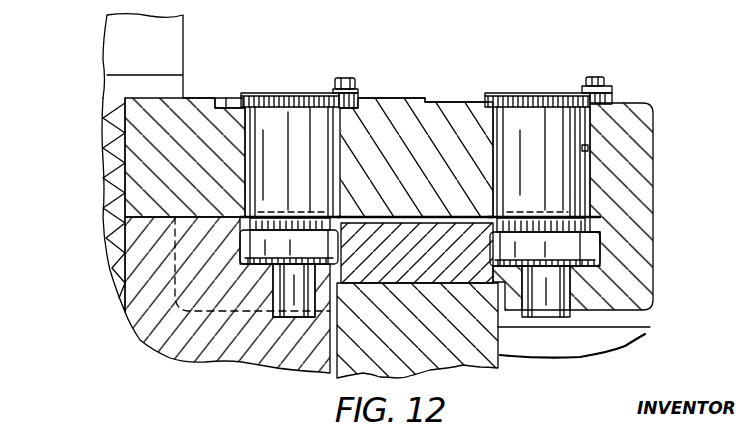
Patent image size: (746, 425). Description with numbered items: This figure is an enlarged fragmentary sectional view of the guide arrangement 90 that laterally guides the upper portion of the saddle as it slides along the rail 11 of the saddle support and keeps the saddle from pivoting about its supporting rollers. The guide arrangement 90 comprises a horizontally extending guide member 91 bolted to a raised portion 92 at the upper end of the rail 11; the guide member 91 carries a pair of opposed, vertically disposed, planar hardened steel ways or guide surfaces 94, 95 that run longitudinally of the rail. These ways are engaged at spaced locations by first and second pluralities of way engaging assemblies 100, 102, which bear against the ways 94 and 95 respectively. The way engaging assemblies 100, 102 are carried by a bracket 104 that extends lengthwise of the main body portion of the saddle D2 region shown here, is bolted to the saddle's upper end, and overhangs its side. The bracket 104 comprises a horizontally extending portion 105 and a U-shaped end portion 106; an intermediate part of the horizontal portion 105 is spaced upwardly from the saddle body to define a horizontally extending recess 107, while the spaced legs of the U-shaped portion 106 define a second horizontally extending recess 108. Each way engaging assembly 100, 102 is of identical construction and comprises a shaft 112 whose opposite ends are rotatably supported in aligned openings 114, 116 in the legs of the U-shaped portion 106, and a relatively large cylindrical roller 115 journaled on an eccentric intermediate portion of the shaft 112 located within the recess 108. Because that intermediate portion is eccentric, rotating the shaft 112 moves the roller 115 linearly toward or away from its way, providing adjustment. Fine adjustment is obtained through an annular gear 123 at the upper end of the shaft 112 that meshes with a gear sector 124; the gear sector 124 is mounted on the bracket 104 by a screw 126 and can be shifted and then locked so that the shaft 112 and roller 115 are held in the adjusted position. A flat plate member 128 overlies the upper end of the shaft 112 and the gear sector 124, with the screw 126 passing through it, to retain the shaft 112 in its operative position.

The rail 11 is at (652, 333).
The guide arrangement 90 is at (414, 214).
The guide member 91 is at (427, 281).
The raised portion 92 is at (500, 346).
The way or guide surface 94 is at (340, 256).
The way or guide surface 95 is at (496, 256).
The way engaging assembly 100 is at (268, 94).
The way engaging assembly 102 is at (535, 90).
The bracket 104 is at (660, 116).
The horizontally extending portion 105 is at (400, 78).
The U-shaped right end portion 106 is at (648, 262).
The recess 107 is at (243, 232).
The recess 108 is at (600, 230).
The shaft 112 is at (262, 168).
The opening 114 is at (247, 132).
The roller 115 is at (338, 233).
The opening 116 is at (275, 290).
The annular gear 123 is at (488, 100).
The gear sector 124 is at (613, 96).
The screw 126 is at (604, 60).
The flat plate member 128 is at (610, 86).
The wall thickness dimension D2 is at (96, 130).